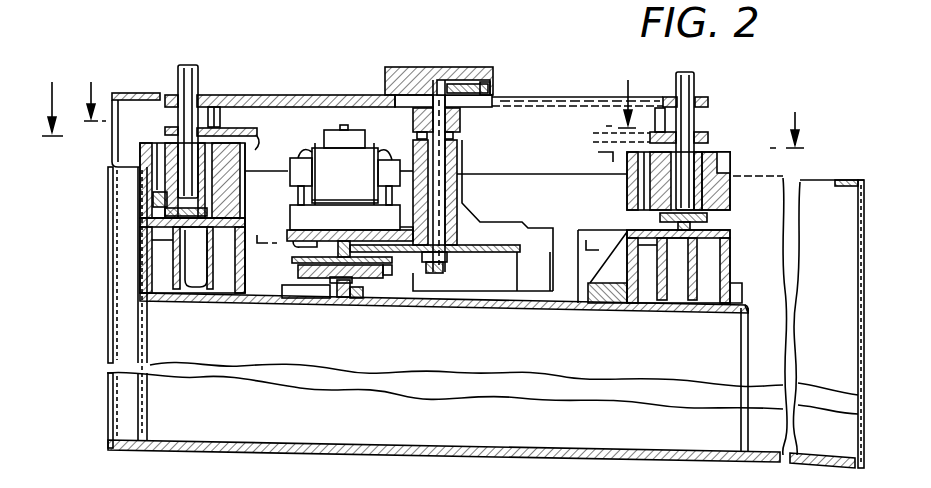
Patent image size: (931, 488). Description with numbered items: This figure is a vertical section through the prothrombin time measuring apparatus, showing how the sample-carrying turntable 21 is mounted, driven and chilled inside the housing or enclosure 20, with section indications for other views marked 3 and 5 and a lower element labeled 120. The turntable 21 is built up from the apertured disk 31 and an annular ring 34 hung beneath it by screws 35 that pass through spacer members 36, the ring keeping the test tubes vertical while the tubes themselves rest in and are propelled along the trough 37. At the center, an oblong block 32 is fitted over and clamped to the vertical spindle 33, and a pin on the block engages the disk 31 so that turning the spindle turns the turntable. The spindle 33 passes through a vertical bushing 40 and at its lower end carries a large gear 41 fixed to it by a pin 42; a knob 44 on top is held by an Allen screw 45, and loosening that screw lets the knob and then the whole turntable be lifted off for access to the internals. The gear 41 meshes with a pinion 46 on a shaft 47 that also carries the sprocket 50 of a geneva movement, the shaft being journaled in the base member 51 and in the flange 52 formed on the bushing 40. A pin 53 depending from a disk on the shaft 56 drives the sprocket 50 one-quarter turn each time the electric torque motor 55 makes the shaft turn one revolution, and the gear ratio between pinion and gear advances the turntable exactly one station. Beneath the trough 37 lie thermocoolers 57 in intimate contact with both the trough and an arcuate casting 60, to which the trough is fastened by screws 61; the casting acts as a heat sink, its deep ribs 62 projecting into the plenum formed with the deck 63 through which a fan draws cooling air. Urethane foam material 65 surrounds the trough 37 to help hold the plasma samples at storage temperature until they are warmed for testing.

The section line 3- 3 is at (419, 103).
The section line 5- 5 is at (359, 147).
The housing or enclosure 20 is at (108, 393).
The rotatable turntable 21 is at (585, 83).
The apertured disk 31 is at (272, 94).
The oblong block 32 is at (461, 120).
The vertical spindle 33 is at (457, 143).
The annular ring 34 is at (700, 135).
The screws 35 is at (256, 137).
The spacer members 36 is at (218, 106).
The trough 37 is at (150, 181).
The vertical bushing 40 is at (462, 166).
The gear 41 is at (487, 254).
The pin 42 is at (423, 272).
The knob 44 is at (485, 57).
The Allen screw 45 is at (490, 85).
The pinion 46 is at (300, 280).
The shaft 47 is at (342, 300).
The sprocket 50 is at (382, 280).
The base member 51 is at (325, 285).
The flange 52 is at (295, 246).
The pin 53 is at (372, 285).
The electric torque motor 55 is at (320, 168).
The shaft 56 is at (342, 128).
The thermocoolers 57 is at (178, 290).
The arcuate casting 60 is at (140, 277).
The screws 61 is at (152, 241).
The ribs 62 is at (218, 300).
The deck 63 is at (530, 310).
The urethane foam material 65 is at (232, 193).
The base 120 is at (224, 481).